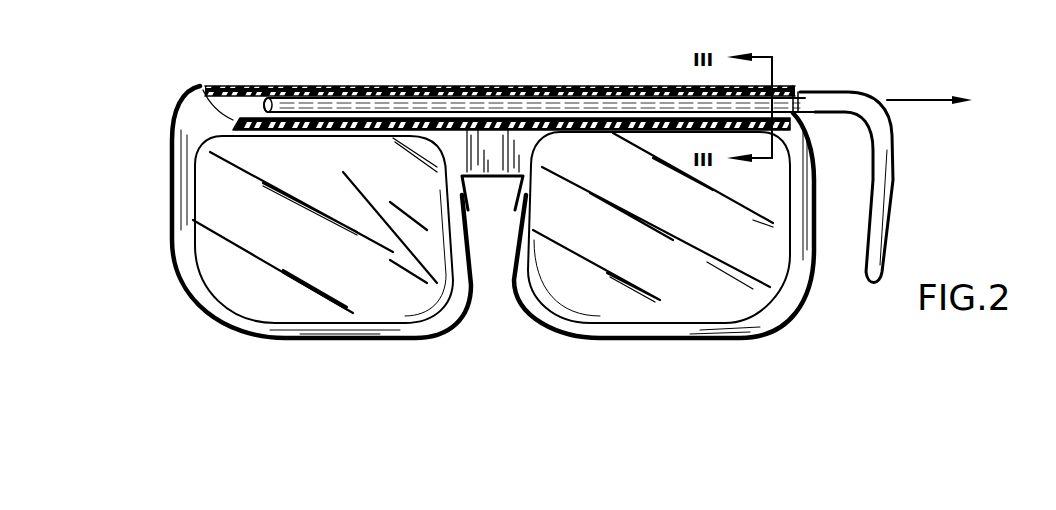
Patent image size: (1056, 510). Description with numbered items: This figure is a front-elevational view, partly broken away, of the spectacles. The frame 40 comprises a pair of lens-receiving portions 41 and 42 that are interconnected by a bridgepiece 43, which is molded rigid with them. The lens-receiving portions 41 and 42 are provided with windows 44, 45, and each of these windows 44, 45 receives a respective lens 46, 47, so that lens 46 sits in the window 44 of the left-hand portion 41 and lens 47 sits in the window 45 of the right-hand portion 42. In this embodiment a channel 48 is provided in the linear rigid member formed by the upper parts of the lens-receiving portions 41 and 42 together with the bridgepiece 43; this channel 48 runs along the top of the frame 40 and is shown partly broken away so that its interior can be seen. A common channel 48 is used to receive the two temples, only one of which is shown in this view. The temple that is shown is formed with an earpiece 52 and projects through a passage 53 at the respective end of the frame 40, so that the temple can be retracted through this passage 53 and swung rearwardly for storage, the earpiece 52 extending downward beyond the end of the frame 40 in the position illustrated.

The frame 40 is at (170, 220).
The lens-receiving portion 41 is at (428, 316).
The lens-receiving portion 42 is at (584, 318).
The bridgepiece 43 is at (433, 86).
The window 44 is at (203, 270).
The window 45 is at (793, 255).
The lens 46 is at (295, 310).
The lens 47 is at (768, 305).
The channel 48 is at (297, 127).
The earpiece 52 is at (897, 207).
The passage 53 is at (793, 92).